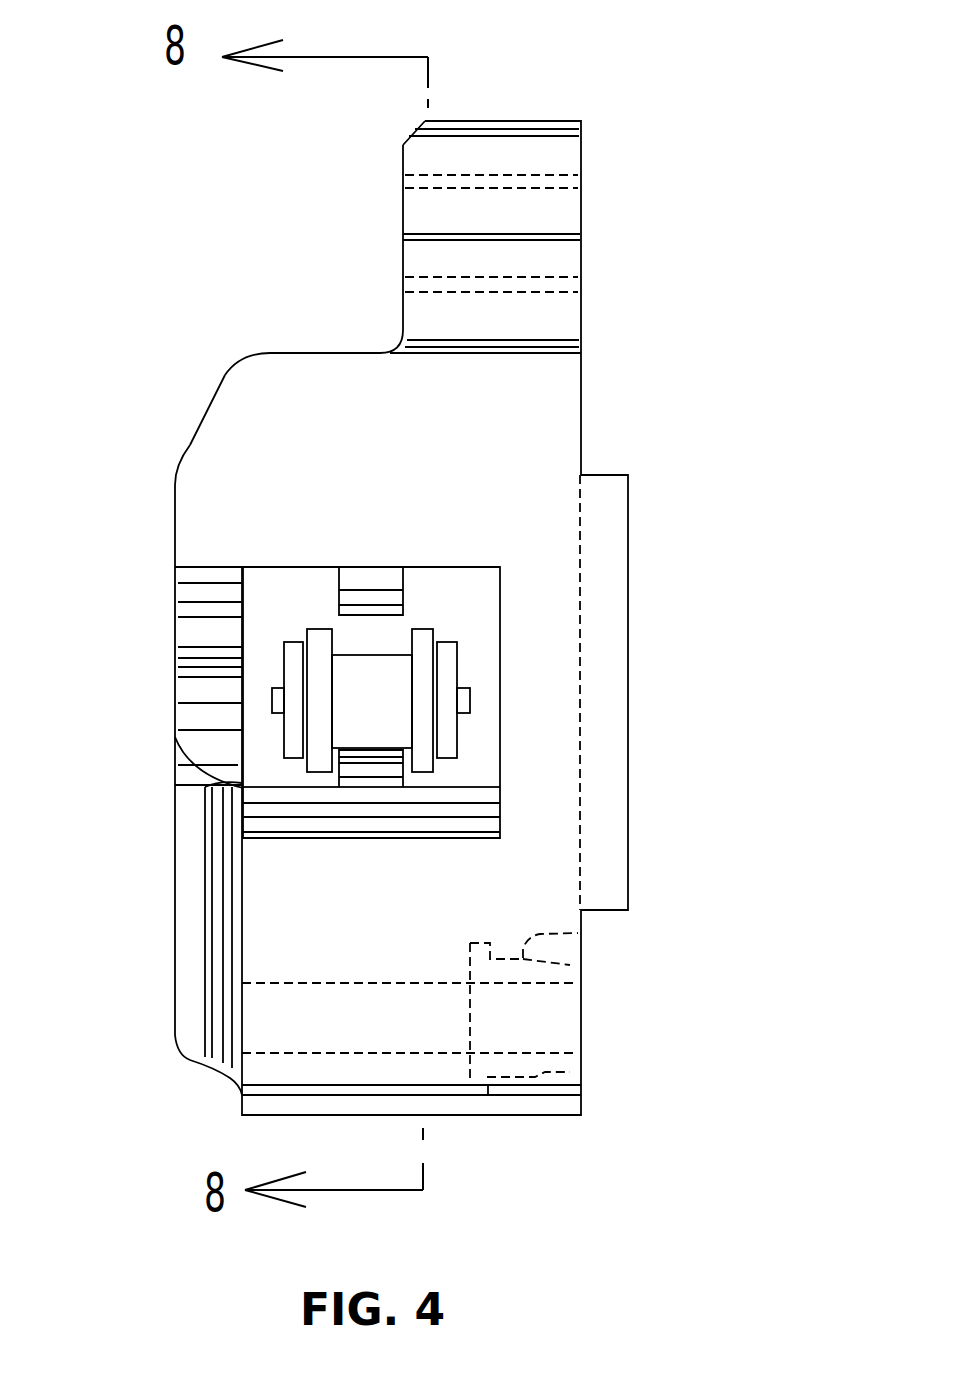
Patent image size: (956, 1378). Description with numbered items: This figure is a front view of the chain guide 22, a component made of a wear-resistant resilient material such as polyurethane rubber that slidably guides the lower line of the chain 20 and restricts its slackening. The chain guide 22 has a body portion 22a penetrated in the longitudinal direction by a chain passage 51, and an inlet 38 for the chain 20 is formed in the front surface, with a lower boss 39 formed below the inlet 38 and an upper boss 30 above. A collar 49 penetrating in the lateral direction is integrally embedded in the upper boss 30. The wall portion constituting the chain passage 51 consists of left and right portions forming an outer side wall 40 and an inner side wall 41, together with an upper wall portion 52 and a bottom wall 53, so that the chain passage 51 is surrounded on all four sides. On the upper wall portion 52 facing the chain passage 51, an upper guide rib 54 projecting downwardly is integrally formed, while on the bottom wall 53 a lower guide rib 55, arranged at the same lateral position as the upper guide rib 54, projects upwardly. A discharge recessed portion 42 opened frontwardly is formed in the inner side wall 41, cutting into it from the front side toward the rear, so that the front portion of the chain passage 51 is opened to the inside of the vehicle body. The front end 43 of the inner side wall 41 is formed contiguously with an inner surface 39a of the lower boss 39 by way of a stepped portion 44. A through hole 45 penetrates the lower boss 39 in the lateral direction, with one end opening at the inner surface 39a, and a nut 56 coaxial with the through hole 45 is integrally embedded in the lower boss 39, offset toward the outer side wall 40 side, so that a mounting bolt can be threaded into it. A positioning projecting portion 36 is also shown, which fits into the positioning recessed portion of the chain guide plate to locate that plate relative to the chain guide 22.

The chain guide 22 is at (193, 266).
The body portion 22a is at (207, 417).
The upper boss 30 is at (511, 130).
The collar 49 is at (576, 177).
The inlet 38 is at (481, 579).
The chain passage 51 is at (465, 598).
The outer side wall 40 is at (562, 588).
The positioning projecting portion 36 is at (628, 623).
The chain 20 is at (475, 717).
The upper wall portion 52 is at (339, 568).
The bottom wall 53 is at (466, 785).
The upper guide rib 54 is at (370, 617).
The lower guide rib 55 is at (383, 777).
The nut 56 is at (578, 933).
The lower boss 39 is at (578, 1010).
The inner surface 39a is at (242, 1032).
The front end 43 is at (187, 686).
The inner side wall 41 is at (175, 716).
The discharge recessed portion 42 is at (195, 745).
The stepped portion 44 is at (187, 857).
The through hole 45 is at (300, 984).